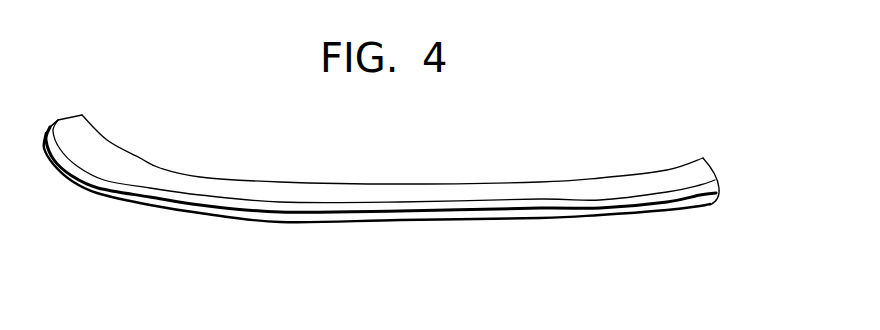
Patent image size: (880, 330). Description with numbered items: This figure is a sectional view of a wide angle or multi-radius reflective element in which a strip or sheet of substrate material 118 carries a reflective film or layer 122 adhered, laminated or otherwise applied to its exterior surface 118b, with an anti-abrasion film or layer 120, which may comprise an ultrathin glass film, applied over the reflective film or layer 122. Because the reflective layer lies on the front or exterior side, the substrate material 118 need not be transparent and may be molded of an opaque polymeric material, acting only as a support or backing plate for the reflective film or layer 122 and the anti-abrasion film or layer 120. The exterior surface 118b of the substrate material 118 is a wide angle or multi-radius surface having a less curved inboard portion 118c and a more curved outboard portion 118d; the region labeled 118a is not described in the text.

The substrate material 118 is at (381, 189).
The upper face of blade 118a is at (371, 184).
The exterior surface 118b is at (418, 203).
The inboard portion 118c is at (515, 228).
The outboard portion 118d is at (135, 206).
The anti-abrasion film or layer 120 is at (583, 205).
The reflective film or layer 122 is at (292, 218).